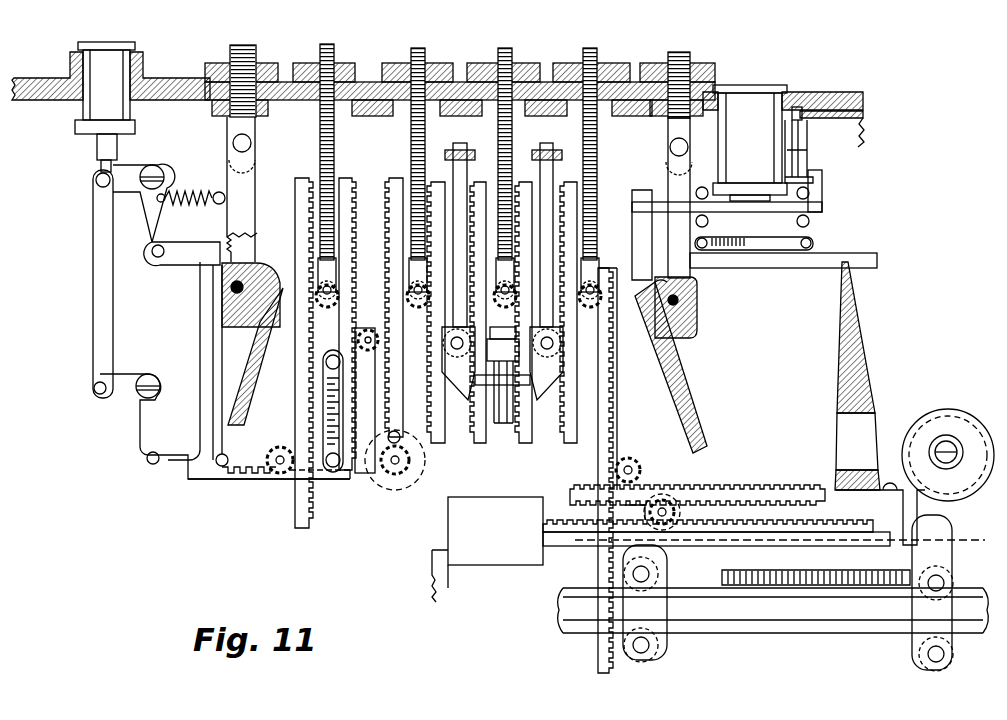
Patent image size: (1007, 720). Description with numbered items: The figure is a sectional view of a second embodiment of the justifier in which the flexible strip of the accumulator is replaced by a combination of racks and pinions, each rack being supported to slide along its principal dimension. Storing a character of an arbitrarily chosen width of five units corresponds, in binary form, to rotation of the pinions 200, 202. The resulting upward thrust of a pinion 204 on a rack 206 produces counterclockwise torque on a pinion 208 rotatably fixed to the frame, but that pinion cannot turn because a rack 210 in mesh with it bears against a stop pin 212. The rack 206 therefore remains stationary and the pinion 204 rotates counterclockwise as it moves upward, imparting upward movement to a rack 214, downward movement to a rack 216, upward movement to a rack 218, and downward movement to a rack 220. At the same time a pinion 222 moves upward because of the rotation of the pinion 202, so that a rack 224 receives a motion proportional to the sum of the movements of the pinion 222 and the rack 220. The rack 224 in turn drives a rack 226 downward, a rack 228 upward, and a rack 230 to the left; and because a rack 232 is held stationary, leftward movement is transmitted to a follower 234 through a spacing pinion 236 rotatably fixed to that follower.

The pinion 200 is at (350, 70).
The pinion 202 is at (522, 70).
The pinion 204 is at (342, 393).
The rack 206 is at (297, 185).
The pinion 208 is at (274, 448).
The rack 210 is at (260, 474).
The stop pin 212 is at (248, 295).
The rack 214 is at (348, 178).
The rack 216 is at (384, 188).
The rack 218 is at (437, 443).
The rack 220 is at (480, 445).
The pinion 222 is at (502, 283).
The rack 224 is at (524, 443).
The rack 226 is at (566, 443).
The rack 228 is at (612, 430).
The rack 230 is at (570, 489).
The rack 232 is at (852, 540).
The follower 234 is at (945, 532).
The spacing pinion 236 is at (678, 520).